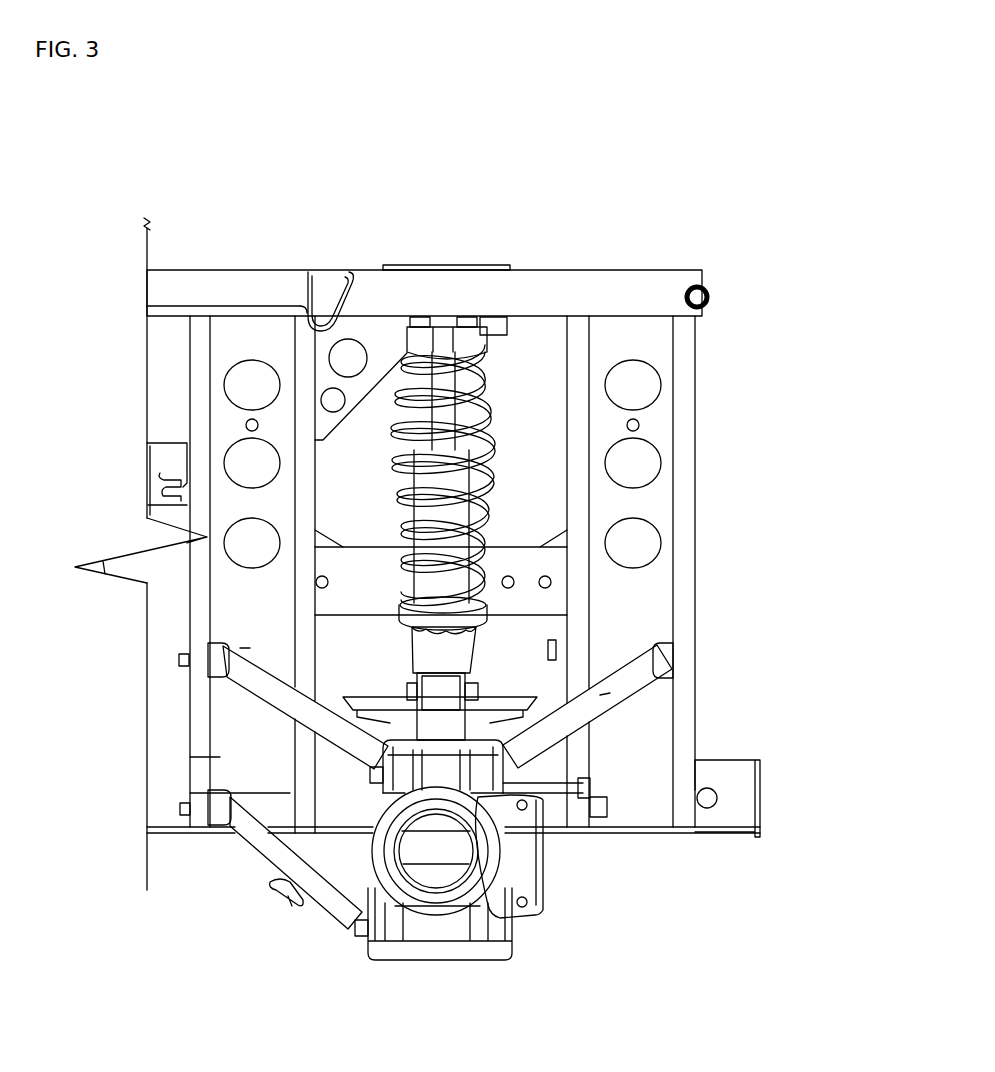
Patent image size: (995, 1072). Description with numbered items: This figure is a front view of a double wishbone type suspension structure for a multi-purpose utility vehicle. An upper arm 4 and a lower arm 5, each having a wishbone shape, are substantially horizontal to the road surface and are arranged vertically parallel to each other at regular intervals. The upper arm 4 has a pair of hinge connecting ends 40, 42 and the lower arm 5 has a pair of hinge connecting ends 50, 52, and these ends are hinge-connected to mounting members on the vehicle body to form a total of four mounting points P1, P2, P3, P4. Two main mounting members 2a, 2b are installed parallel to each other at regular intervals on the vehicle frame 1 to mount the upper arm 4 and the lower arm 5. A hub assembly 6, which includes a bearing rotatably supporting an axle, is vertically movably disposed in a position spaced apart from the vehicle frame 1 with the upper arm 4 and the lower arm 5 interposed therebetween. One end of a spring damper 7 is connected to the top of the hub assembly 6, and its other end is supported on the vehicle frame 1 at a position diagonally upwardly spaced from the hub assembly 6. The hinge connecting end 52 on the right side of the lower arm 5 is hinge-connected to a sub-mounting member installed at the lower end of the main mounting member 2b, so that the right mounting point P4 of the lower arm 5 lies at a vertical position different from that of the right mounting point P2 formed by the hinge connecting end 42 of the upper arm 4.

The vehicle frame 1 is at (547, 290).
The main mounting member 2a is at (198, 488).
The main mounting member 2b is at (683, 537).
The upper arm 4 is at (603, 693).
The lower arm 5 is at (323, 890).
The hub assembly 6 is at (440, 907).
The spring damper 7 is at (490, 477).
The hinge connecting end 40 is at (247, 647).
The hinge connecting end 42 is at (640, 643).
The hinge connecting end 50 is at (213, 768).
The hinge connecting end 52 is at (557, 837).
The mounting point P1 is at (180, 660).
The mounting point P2 is at (553, 650).
The mounting point P3 is at (183, 808).
The mounting point P4 is at (610, 807).